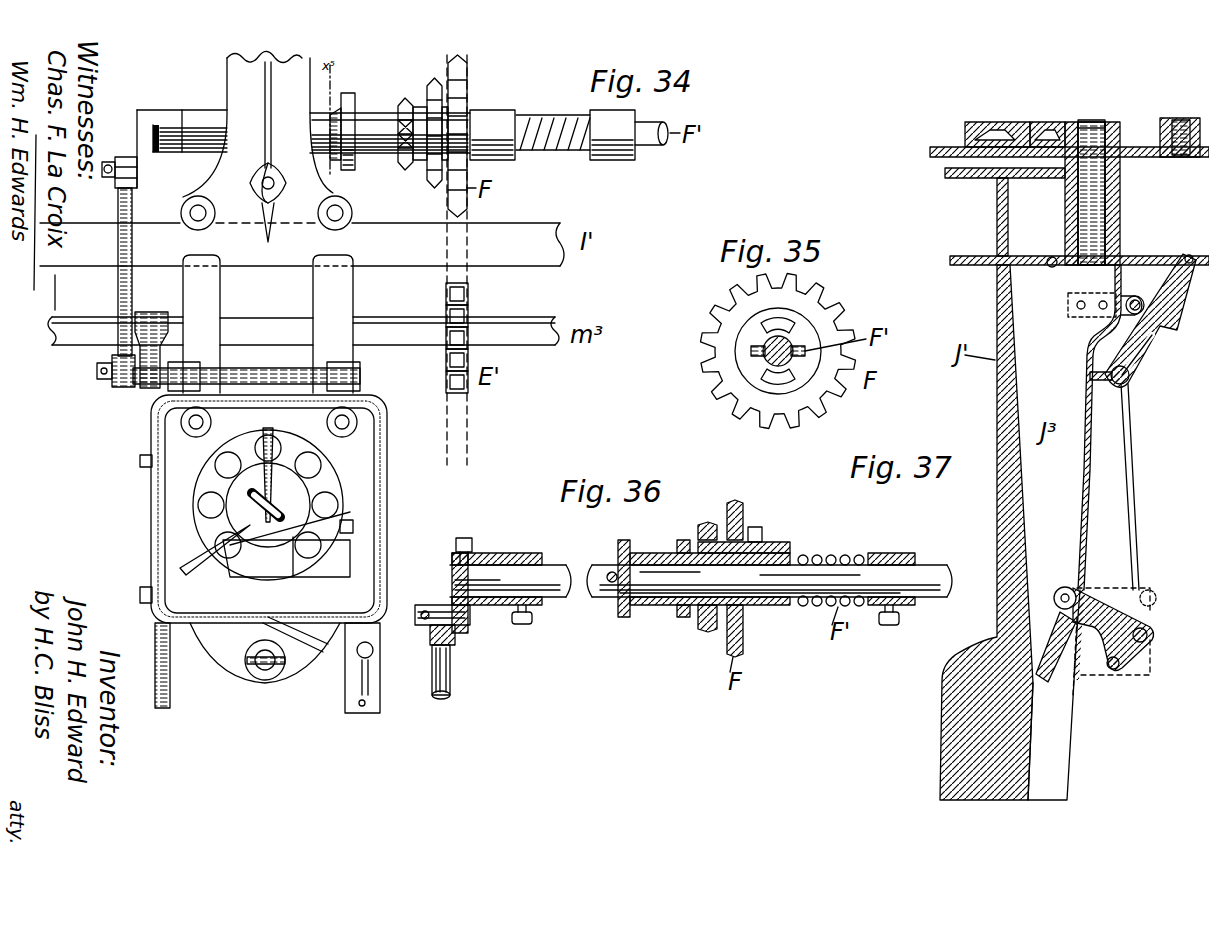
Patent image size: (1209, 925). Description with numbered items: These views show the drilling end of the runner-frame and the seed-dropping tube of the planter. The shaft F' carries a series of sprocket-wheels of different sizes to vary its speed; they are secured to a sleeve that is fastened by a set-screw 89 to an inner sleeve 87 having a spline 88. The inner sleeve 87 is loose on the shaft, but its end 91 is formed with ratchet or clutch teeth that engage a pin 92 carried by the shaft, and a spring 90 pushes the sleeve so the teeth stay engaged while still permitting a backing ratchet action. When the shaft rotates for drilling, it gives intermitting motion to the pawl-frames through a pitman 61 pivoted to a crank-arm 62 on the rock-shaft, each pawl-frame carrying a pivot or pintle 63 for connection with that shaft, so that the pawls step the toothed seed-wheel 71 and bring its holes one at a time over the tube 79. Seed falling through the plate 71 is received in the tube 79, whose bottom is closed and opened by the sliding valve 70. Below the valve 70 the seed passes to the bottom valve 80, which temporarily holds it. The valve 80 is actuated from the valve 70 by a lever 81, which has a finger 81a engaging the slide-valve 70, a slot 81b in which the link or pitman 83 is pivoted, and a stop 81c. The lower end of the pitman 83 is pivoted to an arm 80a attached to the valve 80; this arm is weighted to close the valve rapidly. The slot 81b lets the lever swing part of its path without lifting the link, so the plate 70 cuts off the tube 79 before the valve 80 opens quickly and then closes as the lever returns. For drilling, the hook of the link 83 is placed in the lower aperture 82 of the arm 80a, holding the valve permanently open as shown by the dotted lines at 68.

In FIG. 34, the pitman 61 is at (137, 243).
In FIG. 36, the pitman 61 is at (450, 688).
In FIG. 34, the crank-arm 62 is at (158, 312).
In FIG. 34, the pivot or pintle 63 is at (265, 368).
In FIG. 37, the valve in permanently open position 68 is at (1120, 597).
In FIG. 37, the sliding valve 70 is at (1050, 267).
In FIG. 34, the toothed seed-wheel 71 is at (315, 478).
In FIG. 37, the toothed seed-wheel 71 is at (1018, 122).
In FIG. 37, the tube 79 is at (1092, 206).
In FIG. 37, the bottom valve 80 is at (1052, 670).
In FIG. 37, the arm 80a is at (1103, 612).
In FIG. 37, the lever 81 is at (1172, 340).
In FIG. 37, the finger 81a is at (1160, 300).
In FIG. 37, the slot 81b is at (1128, 378).
In FIG. 37, the stop 81c is at (1098, 381).
In FIG. 37, the lower aperture 82 is at (1120, 665).
In FIG. 37, the link or pitman 83 is at (1140, 470).
In FIG. 34, the inner sleeve 87 is at (384, 100).
In FIG. 35, the inner sleeve 87 is at (779, 372).
In FIG. 36, the inner sleeve 87 is at (650, 605).
In FIG. 34, the spline 88 is at (373, 133).
In FIG. 36, the set-screw 89 is at (762, 540).
In FIG. 34, the spring 90 is at (548, 118).
In FIG. 36, the spring 90 is at (804, 607).
In FIG. 34, the end of sleeve with clutch teeth 91 is at (346, 95).
In FIG. 35, the end of sleeve with clutch teeth 91 is at (760, 362).
In FIG. 36, the end of sleeve with clutch teeth 91 is at (618, 555).
In FIG. 35, the pin 92 is at (750, 350).
In FIG. 36, the pin 92 is at (610, 583).
In FIG. 37, the pin 92 is at (1110, 123).